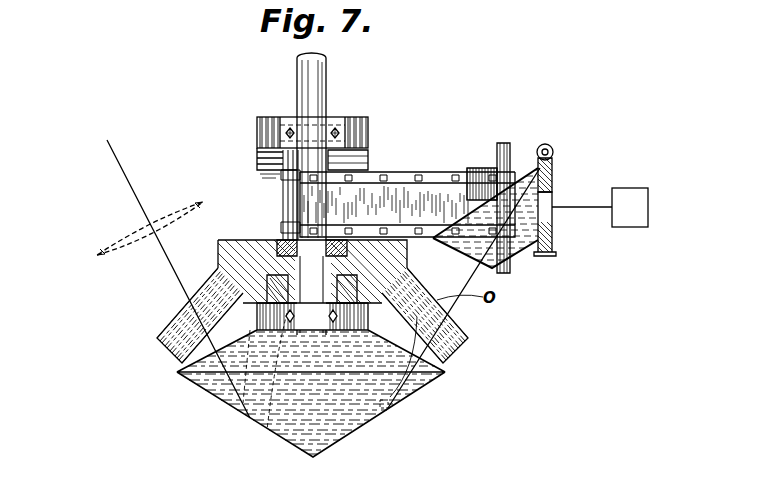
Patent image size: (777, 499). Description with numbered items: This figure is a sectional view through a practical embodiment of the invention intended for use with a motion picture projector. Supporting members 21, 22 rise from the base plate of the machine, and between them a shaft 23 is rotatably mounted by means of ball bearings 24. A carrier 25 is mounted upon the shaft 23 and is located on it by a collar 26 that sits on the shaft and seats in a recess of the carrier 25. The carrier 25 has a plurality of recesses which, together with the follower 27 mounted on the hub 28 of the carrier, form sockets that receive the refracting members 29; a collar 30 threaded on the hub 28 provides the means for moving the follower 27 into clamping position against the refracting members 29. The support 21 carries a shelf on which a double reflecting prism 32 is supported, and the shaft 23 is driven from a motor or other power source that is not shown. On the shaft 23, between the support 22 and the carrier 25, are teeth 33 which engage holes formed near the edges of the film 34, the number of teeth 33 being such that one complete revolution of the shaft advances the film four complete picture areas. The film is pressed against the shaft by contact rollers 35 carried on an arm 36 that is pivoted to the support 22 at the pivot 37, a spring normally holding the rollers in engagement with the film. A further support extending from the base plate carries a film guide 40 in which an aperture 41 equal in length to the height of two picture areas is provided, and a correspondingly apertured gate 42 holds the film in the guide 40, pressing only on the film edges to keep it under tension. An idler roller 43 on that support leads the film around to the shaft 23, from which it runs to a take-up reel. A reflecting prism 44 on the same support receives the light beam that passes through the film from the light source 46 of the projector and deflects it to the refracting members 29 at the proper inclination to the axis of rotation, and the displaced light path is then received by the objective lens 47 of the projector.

The supporting member 21 is at (275, 320).
The supporting member 22 is at (358, 133).
The shaft 23 is at (323, 82).
The ball bearings 24 is at (340, 132).
The carrier 25 is at (408, 260).
The collar 26 is at (280, 247).
The follower 27 is at (227, 278).
The hub 28 is at (292, 327).
The refracting members 29 is at (158, 337).
The collar 30 is at (386, 402).
The double reflecting prism 32 is at (340, 382).
The teeth 33 is at (330, 175).
The film 34 is at (442, 177).
The contact rollers 35 is at (288, 192).
The arm 36 is at (280, 157).
The pivot 37 is at (330, 173).
The film guide 40 is at (545, 145).
The aperture 41 is at (550, 190).
The gate 42 is at (557, 242).
The idler roller 43 is at (488, 170).
The reflecting prism 44 is at (515, 217).
The light source 46 is at (632, 208).
The objective lens 47 is at (109, 238).